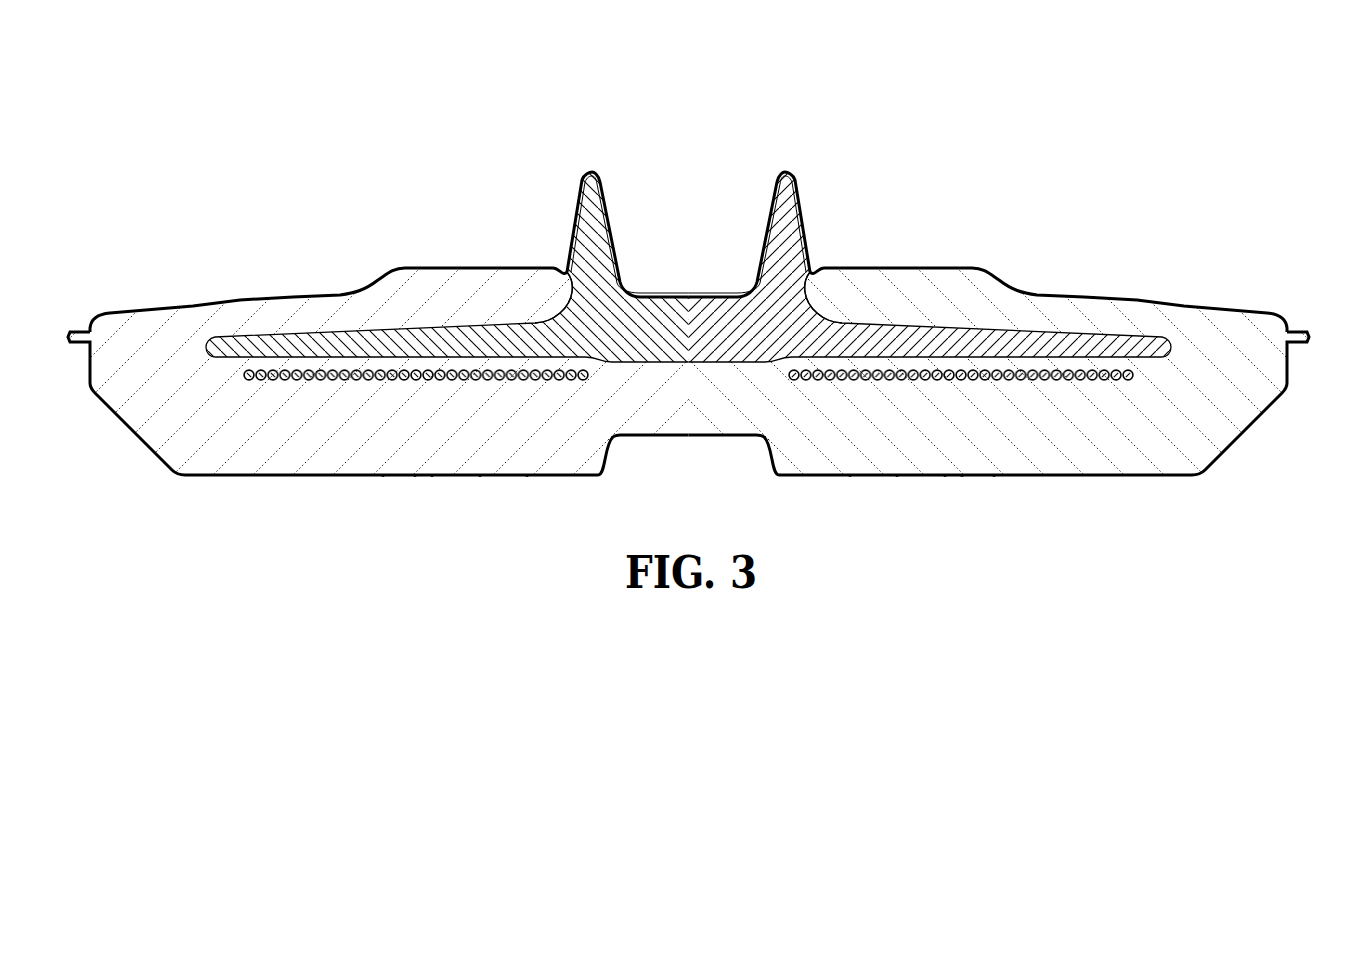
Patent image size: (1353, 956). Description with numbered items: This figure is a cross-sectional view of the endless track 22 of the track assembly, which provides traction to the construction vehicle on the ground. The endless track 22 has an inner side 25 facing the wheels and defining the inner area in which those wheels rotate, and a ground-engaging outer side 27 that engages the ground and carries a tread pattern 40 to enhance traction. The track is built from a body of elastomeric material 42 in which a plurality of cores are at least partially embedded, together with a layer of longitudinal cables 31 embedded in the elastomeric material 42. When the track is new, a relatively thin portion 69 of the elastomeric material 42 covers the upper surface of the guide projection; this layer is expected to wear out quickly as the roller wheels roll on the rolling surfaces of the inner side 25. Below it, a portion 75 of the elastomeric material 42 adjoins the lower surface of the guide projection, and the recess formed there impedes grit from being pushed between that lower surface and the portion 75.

The endless track 22 is at (688, 323).
The inner side 25 is at (688, 221).
The ground-engaging outer side 27 is at (408, 488).
The longitudinal cables 31 is at (273, 382).
The tread pattern 40 is at (978, 418).
The elastomeric material 42 is at (1023, 313).
The portion of elastomeric material 69 is at (578, 203).
The portion of elastomeric material 75 is at (560, 300).